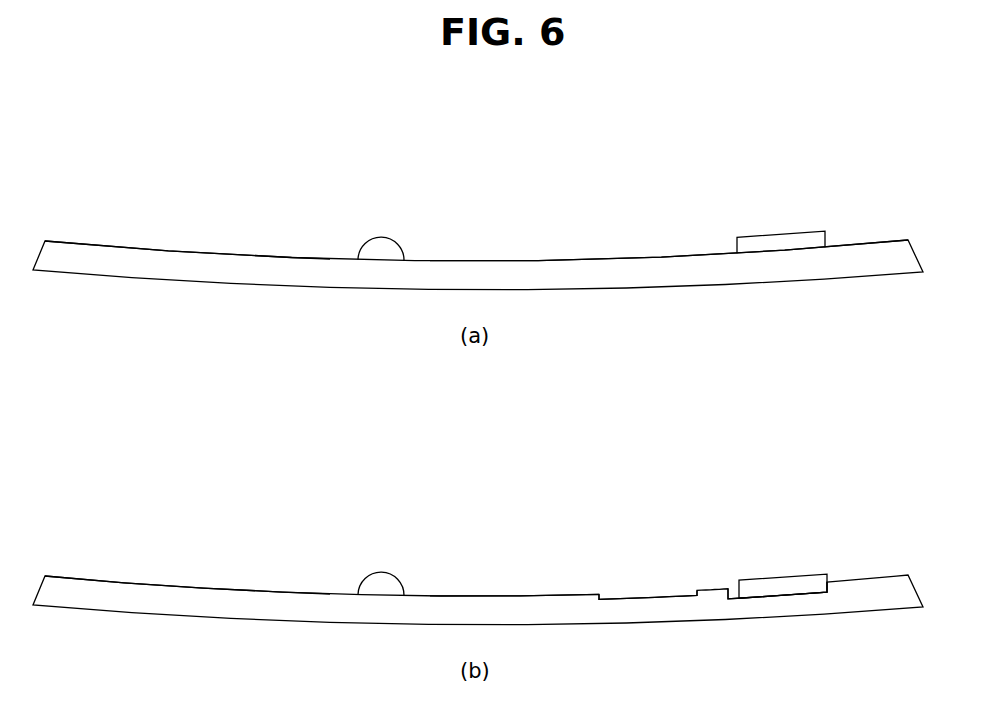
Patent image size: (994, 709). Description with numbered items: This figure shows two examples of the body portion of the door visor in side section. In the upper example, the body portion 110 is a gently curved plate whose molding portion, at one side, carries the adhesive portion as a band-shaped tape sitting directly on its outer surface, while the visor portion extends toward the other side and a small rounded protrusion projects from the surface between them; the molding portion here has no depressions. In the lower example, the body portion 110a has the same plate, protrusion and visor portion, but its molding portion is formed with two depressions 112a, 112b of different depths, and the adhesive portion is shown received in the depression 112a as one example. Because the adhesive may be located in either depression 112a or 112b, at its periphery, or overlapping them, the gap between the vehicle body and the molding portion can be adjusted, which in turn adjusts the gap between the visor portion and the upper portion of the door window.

The body portion 110 is at (935, 103).
The body portion with depressions 110a is at (947, 451).
The depression 112a is at (733, 594).
The depression 112b is at (655, 594).